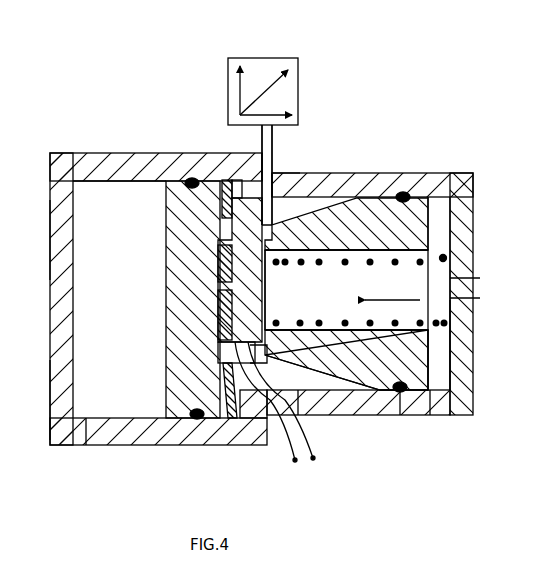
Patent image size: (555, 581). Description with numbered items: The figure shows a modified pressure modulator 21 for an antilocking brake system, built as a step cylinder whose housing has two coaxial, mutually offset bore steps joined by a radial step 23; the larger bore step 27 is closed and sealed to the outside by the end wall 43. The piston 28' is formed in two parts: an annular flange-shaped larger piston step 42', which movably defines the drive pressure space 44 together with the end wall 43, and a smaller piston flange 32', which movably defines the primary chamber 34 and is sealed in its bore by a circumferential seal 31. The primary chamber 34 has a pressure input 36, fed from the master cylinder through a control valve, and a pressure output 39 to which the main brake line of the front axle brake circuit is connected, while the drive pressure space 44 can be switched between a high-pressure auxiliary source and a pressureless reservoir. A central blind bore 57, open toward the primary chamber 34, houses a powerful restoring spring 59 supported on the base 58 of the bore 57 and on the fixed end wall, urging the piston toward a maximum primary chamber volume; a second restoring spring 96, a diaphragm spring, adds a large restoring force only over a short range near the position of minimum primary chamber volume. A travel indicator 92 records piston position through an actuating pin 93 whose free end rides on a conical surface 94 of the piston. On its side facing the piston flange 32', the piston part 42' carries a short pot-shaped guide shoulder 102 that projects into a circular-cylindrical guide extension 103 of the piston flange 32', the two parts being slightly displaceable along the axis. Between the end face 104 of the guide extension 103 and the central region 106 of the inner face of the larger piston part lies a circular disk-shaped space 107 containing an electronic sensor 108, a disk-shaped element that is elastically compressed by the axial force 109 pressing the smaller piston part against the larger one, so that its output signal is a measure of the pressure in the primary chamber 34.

The pressure modulator 21 is at (62, 152).
The radial step 23 is at (243, 186).
The larger bore step 27 is at (95, 182).
The piston 28' is at (166, 327).
The circumferential seal 31 is at (200, 418).
The piston flange 32' is at (411, 432).
The primary chamber 34 is at (445, 360).
The pressure input 36 is at (480, 288).
The pressure output 39 is at (450, 414).
The larger piston step 42' is at (201, 417).
The end wall 43 is at (60, 236).
The drive pressure space 44 is at (80, 375).
The central blind bore 57 is at (415, 290).
The base of the bore 58 is at (262, 275).
The restoring spring 59 is at (446, 256).
The travel indicator 92 is at (272, 62).
The actuating pin 93 is at (274, 141).
The conical surface 94 is at (286, 137).
The second restoring spring 96 is at (229, 385).
The guide shoulder 102 is at (273, 178).
The guide extension 103 is at (265, 326).
The end face 104 is at (224, 238).
The central region 106 is at (225, 340).
The circular disk-shaped space 107 is at (224, 265).
The electronic sensor 108 is at (222, 300).
The axial force 109 is at (455, 300).